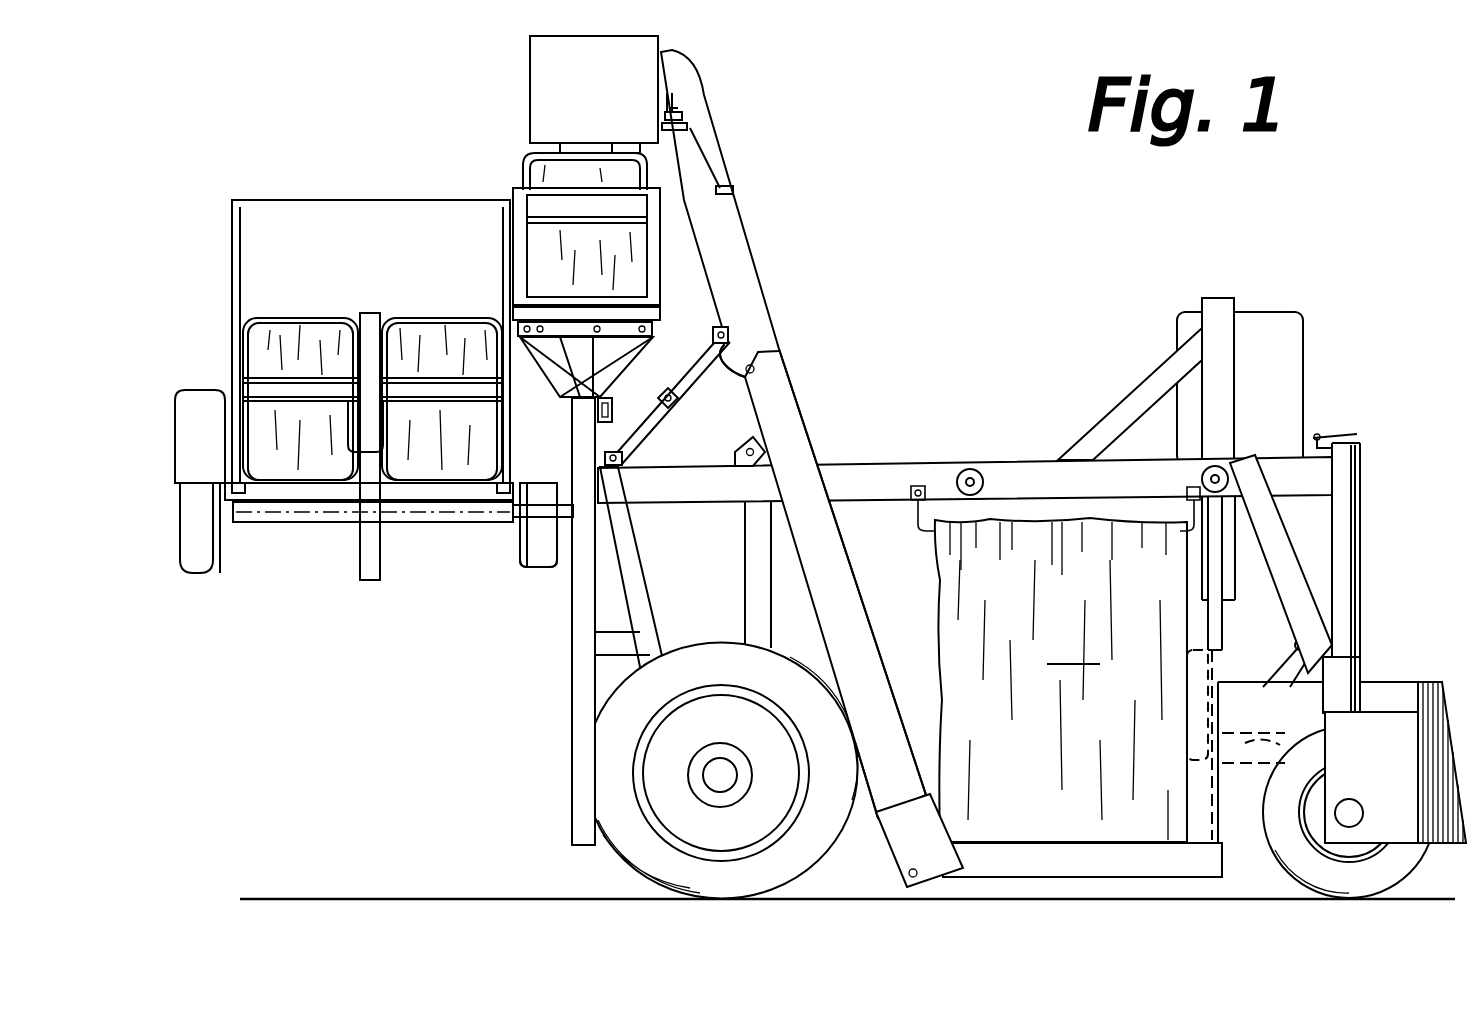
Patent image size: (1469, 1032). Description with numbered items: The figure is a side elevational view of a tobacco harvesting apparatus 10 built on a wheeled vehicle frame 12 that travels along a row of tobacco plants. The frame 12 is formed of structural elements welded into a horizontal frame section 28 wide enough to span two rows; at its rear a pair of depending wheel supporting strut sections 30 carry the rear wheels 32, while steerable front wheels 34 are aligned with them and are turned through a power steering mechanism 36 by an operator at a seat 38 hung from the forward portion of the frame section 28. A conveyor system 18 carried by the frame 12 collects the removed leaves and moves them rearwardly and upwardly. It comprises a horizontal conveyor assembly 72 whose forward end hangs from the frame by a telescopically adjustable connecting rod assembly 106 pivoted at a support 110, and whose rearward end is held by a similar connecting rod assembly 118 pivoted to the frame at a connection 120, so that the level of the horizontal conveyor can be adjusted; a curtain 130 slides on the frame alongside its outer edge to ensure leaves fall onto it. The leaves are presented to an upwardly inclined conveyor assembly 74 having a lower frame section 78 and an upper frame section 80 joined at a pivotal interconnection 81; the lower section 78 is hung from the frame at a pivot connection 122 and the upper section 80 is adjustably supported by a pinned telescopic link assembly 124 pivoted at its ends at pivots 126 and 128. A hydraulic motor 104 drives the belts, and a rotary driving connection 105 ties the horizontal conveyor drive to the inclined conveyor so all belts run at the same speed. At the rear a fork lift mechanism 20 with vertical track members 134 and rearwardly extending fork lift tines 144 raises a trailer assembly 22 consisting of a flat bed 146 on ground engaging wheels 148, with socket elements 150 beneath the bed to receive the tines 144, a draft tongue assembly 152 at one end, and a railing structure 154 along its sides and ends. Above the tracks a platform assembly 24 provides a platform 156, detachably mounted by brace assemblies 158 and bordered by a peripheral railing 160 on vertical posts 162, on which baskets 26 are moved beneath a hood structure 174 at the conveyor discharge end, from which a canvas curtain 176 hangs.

The apparatus 10 is at (924, 314).
The wheeled vehicle frame 12 is at (893, 428).
The conveyor system 18 is at (886, 863).
The fork lift mechanism 20 is at (528, 518).
The trailer assembly 22 is at (320, 506).
The platform assembly 24 is at (672, 306).
The baskets 26 is at (515, 158).
The horizontal frame section 28 is at (1052, 440).
The wheel supporting strut sections 30 is at (760, 547).
The rear wheels 32 is at (703, 647).
The front wheels 34 is at (1297, 867).
The power steering mechanism 36 is at (1340, 427).
The seat 38 is at (1248, 740).
The horizontal conveyor assembly 72 is at (1072, 881).
The upwardly inclined conveyor assembly 74 is at (858, 557).
The lower frame section 78 is at (838, 637).
The upper frame section 80 is at (718, 275).
The pivotal interconnection 81 is at (742, 385).
The hydraulic motor 104 is at (681, 143).
The rotary driving connection 105 is at (920, 817).
The telescopically adjustable connecting rod assembly 106 is at (1226, 612).
The pivotal support 110 is at (1202, 480).
The telescopically adjustable connecting rod assembly 118 is at (988, 512).
The pivotal connection 120 is at (984, 483).
The pivot connection 122 is at (737, 447).
The pinned telescopic link assembly 124 is at (667, 384).
The pivot 126 is at (724, 329).
The pivot 128 is at (622, 468).
The curtain 130 is at (1055, 664).
The track members 134 is at (573, 633).
The fork lift tines 144 is at (543, 568).
The flat bed 146 is at (410, 490).
The ground engaging wheels 148 is at (200, 570).
The socket elements 150 is at (467, 513).
The draft tongue assembly 152 is at (373, 567).
The railing structure 154 is at (238, 248).
The platform 156 is at (563, 308).
The brace assemblies 158 is at (548, 392).
The peripheral railing 160 is at (668, 188).
The vertical posts 162 is at (518, 240).
The hood structure 174 is at (545, 80).
The curtain 176 is at (517, 188).